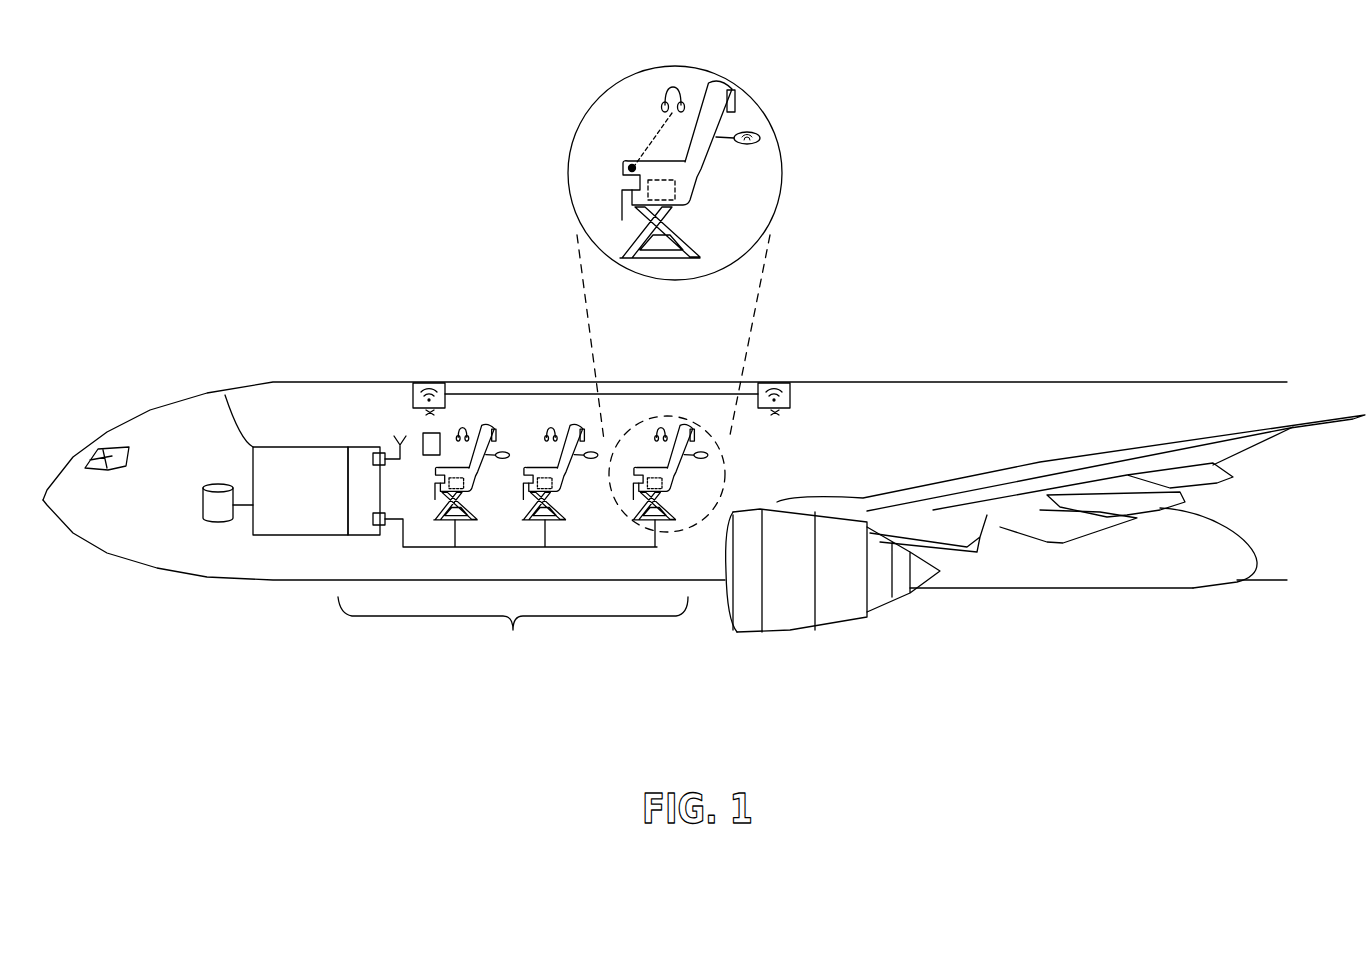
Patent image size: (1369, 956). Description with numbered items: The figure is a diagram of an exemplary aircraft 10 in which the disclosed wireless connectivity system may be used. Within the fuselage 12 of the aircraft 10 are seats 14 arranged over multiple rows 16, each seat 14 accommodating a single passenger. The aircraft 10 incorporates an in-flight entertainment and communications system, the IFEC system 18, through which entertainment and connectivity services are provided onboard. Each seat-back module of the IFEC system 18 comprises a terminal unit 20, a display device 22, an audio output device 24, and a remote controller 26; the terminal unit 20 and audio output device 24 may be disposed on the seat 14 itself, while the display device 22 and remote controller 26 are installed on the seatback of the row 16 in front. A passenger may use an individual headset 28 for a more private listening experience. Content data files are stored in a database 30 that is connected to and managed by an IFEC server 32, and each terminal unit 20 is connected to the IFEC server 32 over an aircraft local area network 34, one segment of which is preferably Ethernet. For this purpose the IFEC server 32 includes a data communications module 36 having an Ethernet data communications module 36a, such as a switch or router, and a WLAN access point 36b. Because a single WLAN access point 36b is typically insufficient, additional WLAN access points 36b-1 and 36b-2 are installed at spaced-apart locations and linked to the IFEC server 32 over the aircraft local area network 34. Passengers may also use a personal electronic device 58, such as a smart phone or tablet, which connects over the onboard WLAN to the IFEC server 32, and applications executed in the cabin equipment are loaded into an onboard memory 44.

The aircraft 10 is at (983, 382).
The fuselage 12 is at (625, 423).
The seat 14 is at (488, 426).
The row 16 is at (513, 629).
The in-flight entertainment and communications (IFEC) system 18 is at (238, 584).
The terminal unit 20 is at (670, 169).
The display device 22 is at (735, 100).
The audio output device 24 is at (628, 167).
The remote controller 26 is at (742, 145).
The headset 28 is at (664, 104).
The database 30 is at (219, 482).
The IFEC server 32 is at (298, 518).
The aircraft local area network 34 is at (527, 547).
The data communications module 36 is at (361, 446).
The Ethernet data communications module 36a is at (385, 525).
The WLAN access point 36b is at (386, 465).
The additional WLAN access point 36b-1 is at (429, 383).
The additional WLAN access point 36b-2 is at (777, 383).
The memory 44 is at (253, 448).
The personal electronic device (PED) 58 is at (422, 432).